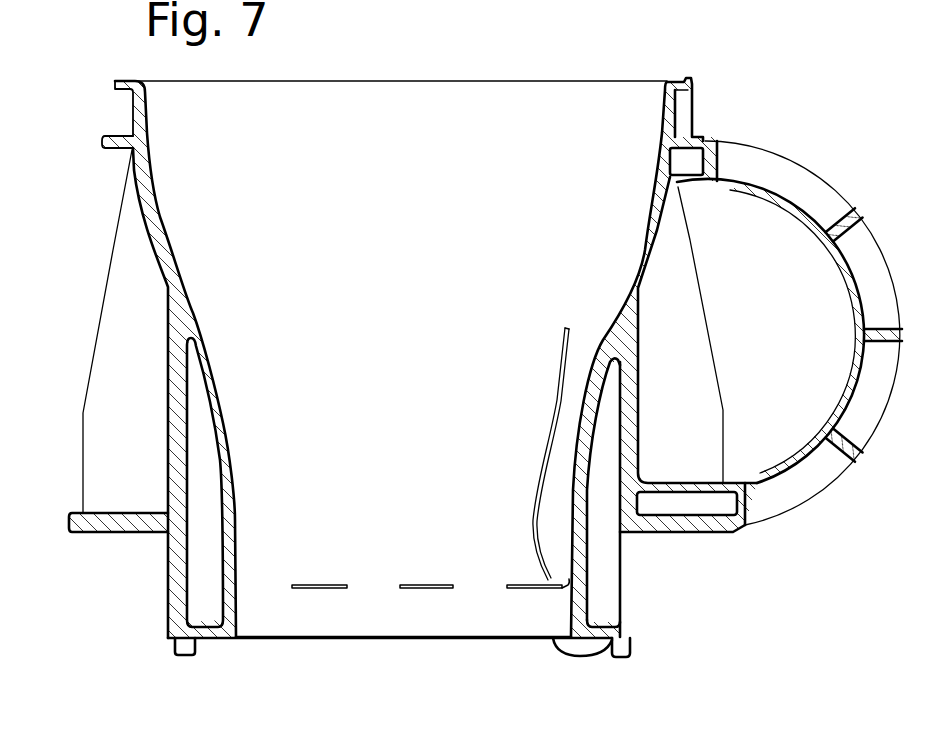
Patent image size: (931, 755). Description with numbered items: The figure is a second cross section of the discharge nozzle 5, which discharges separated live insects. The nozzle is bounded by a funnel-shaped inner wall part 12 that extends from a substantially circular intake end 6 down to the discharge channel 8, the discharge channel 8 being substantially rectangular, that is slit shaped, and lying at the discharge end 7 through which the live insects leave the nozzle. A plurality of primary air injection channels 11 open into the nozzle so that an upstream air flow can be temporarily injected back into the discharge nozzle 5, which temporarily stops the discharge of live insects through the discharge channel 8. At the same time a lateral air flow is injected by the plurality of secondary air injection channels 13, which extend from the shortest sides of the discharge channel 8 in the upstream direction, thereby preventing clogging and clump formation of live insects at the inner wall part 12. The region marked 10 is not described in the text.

The discharge nozzle 5 is at (688, 37).
The intake end 6 is at (690, 80).
The discharge end 7 is at (600, 652).
The discharge channel 8 is at (260, 617).
The annular gap 10 is at (205, 570).
The primary air injection channels 11 is at (510, 583).
The inner wall part 12 is at (160, 234).
The secondary air injection channels 13 is at (558, 343).